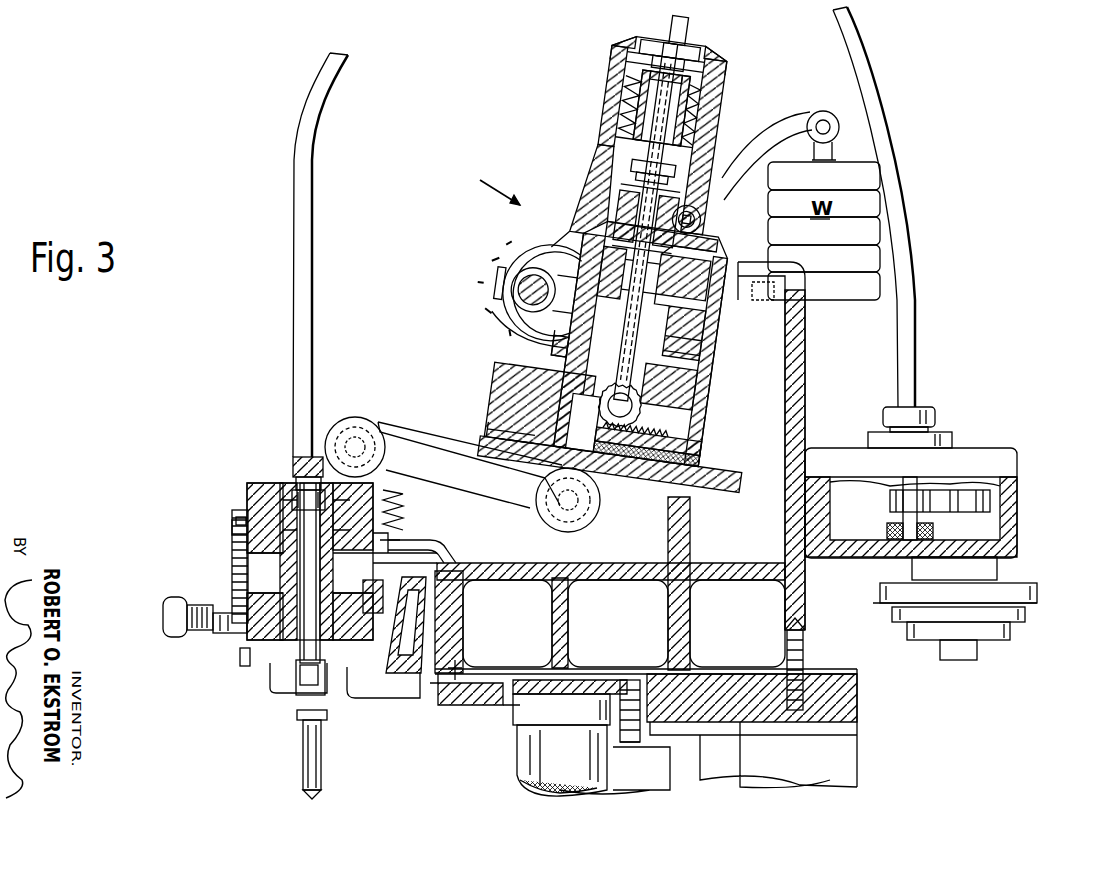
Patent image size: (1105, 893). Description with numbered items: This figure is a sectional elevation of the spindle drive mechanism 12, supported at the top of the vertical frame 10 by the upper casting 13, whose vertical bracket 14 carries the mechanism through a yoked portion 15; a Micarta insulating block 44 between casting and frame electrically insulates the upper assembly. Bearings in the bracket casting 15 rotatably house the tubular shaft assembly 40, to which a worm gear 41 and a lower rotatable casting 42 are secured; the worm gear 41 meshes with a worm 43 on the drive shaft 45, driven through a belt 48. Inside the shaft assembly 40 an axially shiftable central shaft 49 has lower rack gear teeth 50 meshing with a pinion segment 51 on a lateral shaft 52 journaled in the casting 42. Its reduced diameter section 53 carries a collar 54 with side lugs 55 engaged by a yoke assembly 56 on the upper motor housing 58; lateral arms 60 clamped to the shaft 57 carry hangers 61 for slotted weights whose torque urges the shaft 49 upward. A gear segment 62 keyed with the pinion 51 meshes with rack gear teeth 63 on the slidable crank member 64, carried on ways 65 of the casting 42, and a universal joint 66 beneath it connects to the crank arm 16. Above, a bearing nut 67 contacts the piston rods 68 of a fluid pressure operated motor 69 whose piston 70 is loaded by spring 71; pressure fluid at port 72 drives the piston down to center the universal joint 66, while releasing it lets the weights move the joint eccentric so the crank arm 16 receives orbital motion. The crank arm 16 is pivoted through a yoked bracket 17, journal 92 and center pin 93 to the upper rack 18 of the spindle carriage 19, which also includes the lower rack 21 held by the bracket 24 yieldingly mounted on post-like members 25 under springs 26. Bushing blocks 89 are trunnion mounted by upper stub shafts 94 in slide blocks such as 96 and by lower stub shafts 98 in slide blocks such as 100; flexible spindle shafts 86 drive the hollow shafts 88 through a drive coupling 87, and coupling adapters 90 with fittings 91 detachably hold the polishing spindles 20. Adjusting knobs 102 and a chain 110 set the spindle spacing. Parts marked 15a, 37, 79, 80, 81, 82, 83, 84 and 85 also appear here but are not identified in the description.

The vertical frame 10 is at (857, 752).
The spindle drive mechanism 12 is at (489, 180).
The upper casting 13 is at (582, 566).
The vertical bracket 14 is at (806, 400).
The yoked portion 15 is at (642, 342).
The housing flange 15a is at (559, 293).
The crank arm 16 is at (425, 437).
The yoked bracket 17 is at (338, 430).
The upper rack 18 is at (242, 482).
The spindle guide means 19 is at (212, 553).
The polishing spindles 20 is at (322, 775).
The lower rack 21 is at (247, 684).
The bracket 24 is at (426, 620).
The post-like members 25 is at (362, 708).
The springs 26 is at (403, 510).
The motor 37 is at (520, 760).
The vertical shaft assembly 40 is at (646, 221).
The worm gear 41 is at (683, 277).
The lower rotatable casting 42 is at (539, 406).
The worm 43 is at (527, 289).
The Micarta insulating block 44 is at (455, 700).
The drive shaft 45 is at (534, 290).
The belt 48 is at (529, 329).
The central shaft 49 is at (682, 346).
The rack gear teeth 50 is at (583, 422).
The pinion segment 51 is at (705, 362).
The lateral shaft 52 is at (620, 405).
The reduced diameter section 53 is at (659, 104).
The bearing block 54 is at (594, 189).
The side lugs 55 is at (653, 172).
The yoke assembly 56 is at (686, 219).
The shaft 57 is at (687, 220).
The upper motor housing 58 is at (691, 115).
The lateral arms 60 is at (780, 112).
The hangers 61 is at (838, 135).
The gear segment 62 is at (649, 438).
The rack gear teeth 63 is at (646, 454).
The slidable crank member 64 is at (610, 464).
The ways 65 is at (511, 433).
The universal joint 66 is at (600, 508).
The bearing nut 67 is at (630, 106).
The piston rods 68 is at (661, 108).
The fluid pressure operated motor 69 is at (658, 133).
The piston 70 is at (666, 50).
The spring 71 is at (667, 63).
The port 72 is at (679, 31).
The pulley 79 is at (1032, 610).
The gear housing 80 is at (1017, 528).
The gear 81 is at (990, 508).
The collar 82 is at (960, 492).
The bearing 83 is at (887, 526).
The shaft 84 is at (903, 490).
The bushing 85 is at (936, 418).
The flexible spindle shafts 86 is at (292, 165).
The drive coupling 87 is at (292, 462).
The hollow shafts 88 is at (290, 476).
The spindle bushings 89 is at (232, 580).
The coupling adapter 90 is at (297, 714).
The fittings 91 is at (302, 735).
The journal 92 is at (360, 428).
The center pin 93 is at (375, 440).
The upper stub shafts 94 is at (400, 536).
The slide block 96 is at (278, 480).
The lower stub shafts 98 is at (376, 612).
The slide block 100 is at (270, 688).
The adjusting knobs 102 is at (163, 605).
The chain 110 is at (236, 518).